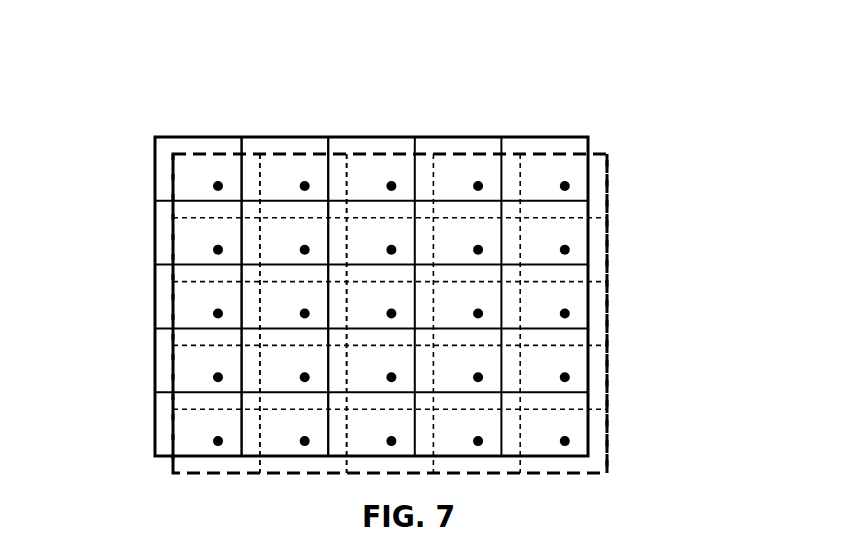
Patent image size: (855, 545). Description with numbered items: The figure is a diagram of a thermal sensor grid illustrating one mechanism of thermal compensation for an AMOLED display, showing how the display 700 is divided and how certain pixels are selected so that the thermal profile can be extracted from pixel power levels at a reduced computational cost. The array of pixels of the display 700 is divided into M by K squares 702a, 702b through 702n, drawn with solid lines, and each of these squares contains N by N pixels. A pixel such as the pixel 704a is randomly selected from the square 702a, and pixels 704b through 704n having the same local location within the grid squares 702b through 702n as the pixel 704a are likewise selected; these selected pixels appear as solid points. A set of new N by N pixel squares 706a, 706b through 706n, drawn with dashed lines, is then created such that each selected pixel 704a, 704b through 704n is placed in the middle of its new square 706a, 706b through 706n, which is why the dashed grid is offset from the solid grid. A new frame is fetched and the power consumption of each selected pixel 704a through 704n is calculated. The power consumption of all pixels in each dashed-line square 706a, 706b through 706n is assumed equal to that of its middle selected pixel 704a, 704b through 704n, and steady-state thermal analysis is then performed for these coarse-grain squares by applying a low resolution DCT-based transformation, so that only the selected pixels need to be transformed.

The display 700 is at (380, 137).
The square 702a is at (160, 156).
The square 702b is at (272, 150).
The square 702n is at (570, 392).
The pixel 704a is at (218, 185).
The pixel 704b is at (305, 184).
The pixel 704n is at (567, 440).
The new pixel square 706a is at (172, 185).
The new pixel square 706b is at (249, 176).
The new pixel square 706n is at (607, 455).